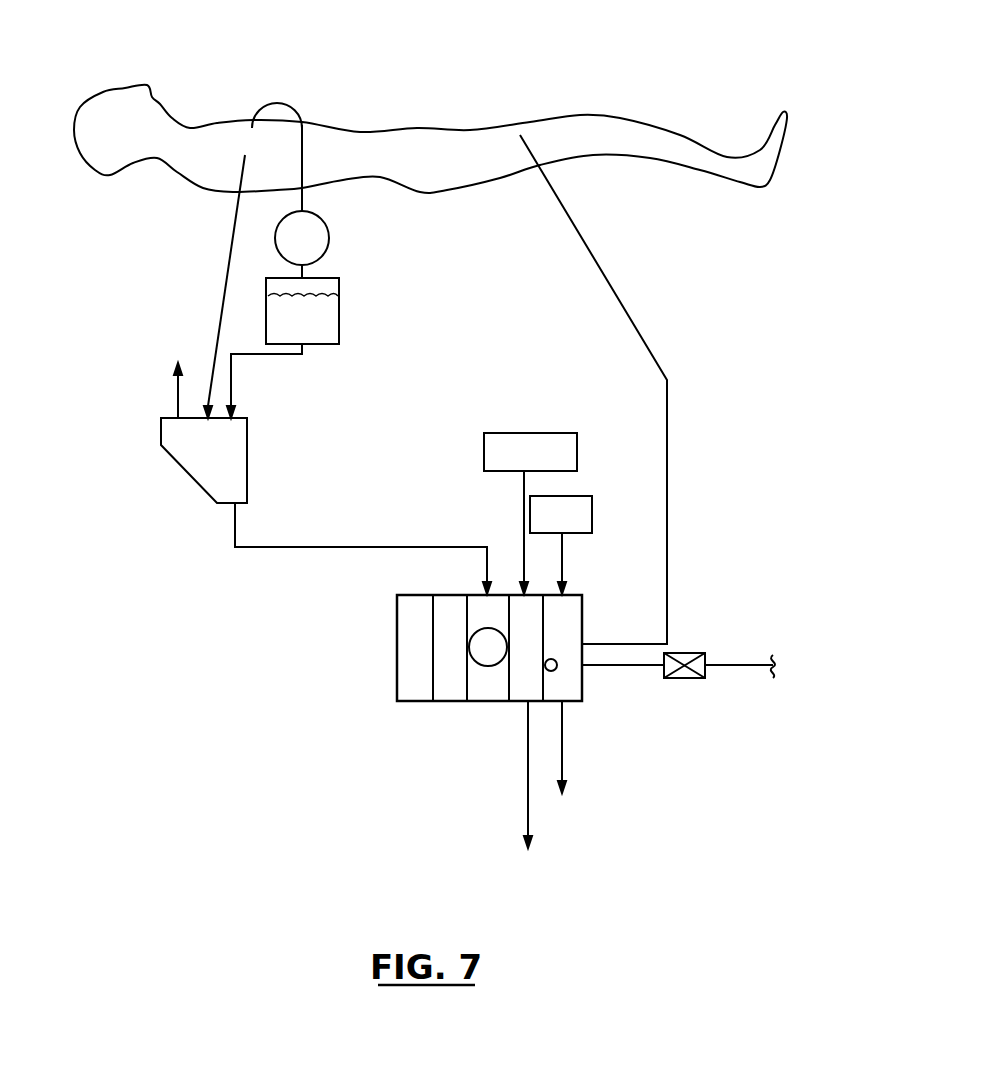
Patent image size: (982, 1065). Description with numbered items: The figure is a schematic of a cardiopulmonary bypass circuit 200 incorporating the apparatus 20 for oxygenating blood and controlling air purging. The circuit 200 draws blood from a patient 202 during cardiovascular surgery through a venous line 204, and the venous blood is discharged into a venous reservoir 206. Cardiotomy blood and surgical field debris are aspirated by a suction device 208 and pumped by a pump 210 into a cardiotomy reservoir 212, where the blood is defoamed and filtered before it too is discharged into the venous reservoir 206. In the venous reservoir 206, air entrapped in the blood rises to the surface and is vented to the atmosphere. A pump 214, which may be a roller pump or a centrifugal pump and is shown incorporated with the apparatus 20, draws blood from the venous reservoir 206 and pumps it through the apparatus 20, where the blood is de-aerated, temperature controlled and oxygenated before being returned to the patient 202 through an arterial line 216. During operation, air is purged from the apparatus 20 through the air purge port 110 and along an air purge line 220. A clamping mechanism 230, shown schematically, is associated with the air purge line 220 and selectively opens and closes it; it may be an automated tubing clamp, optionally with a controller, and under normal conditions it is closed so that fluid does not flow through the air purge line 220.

The extracorporeal blood circuit 200 is at (560, 510).
The patient 202 is at (417, 126).
The venous line 204 is at (222, 277).
The venous reservoir 206 is at (195, 470).
The suction device 208 is at (288, 103).
The pump 210 is at (320, 243).
The cardiotomy reservoir 212 is at (332, 320).
The pump 214 is at (470, 640).
The arterial line 216 is at (592, 255).
The air purge line 220 is at (735, 665).
The clamping mechanism 230 is at (691, 696).
The air purge port 110 is at (554, 659).
The apparatus 20 is at (590, 722).